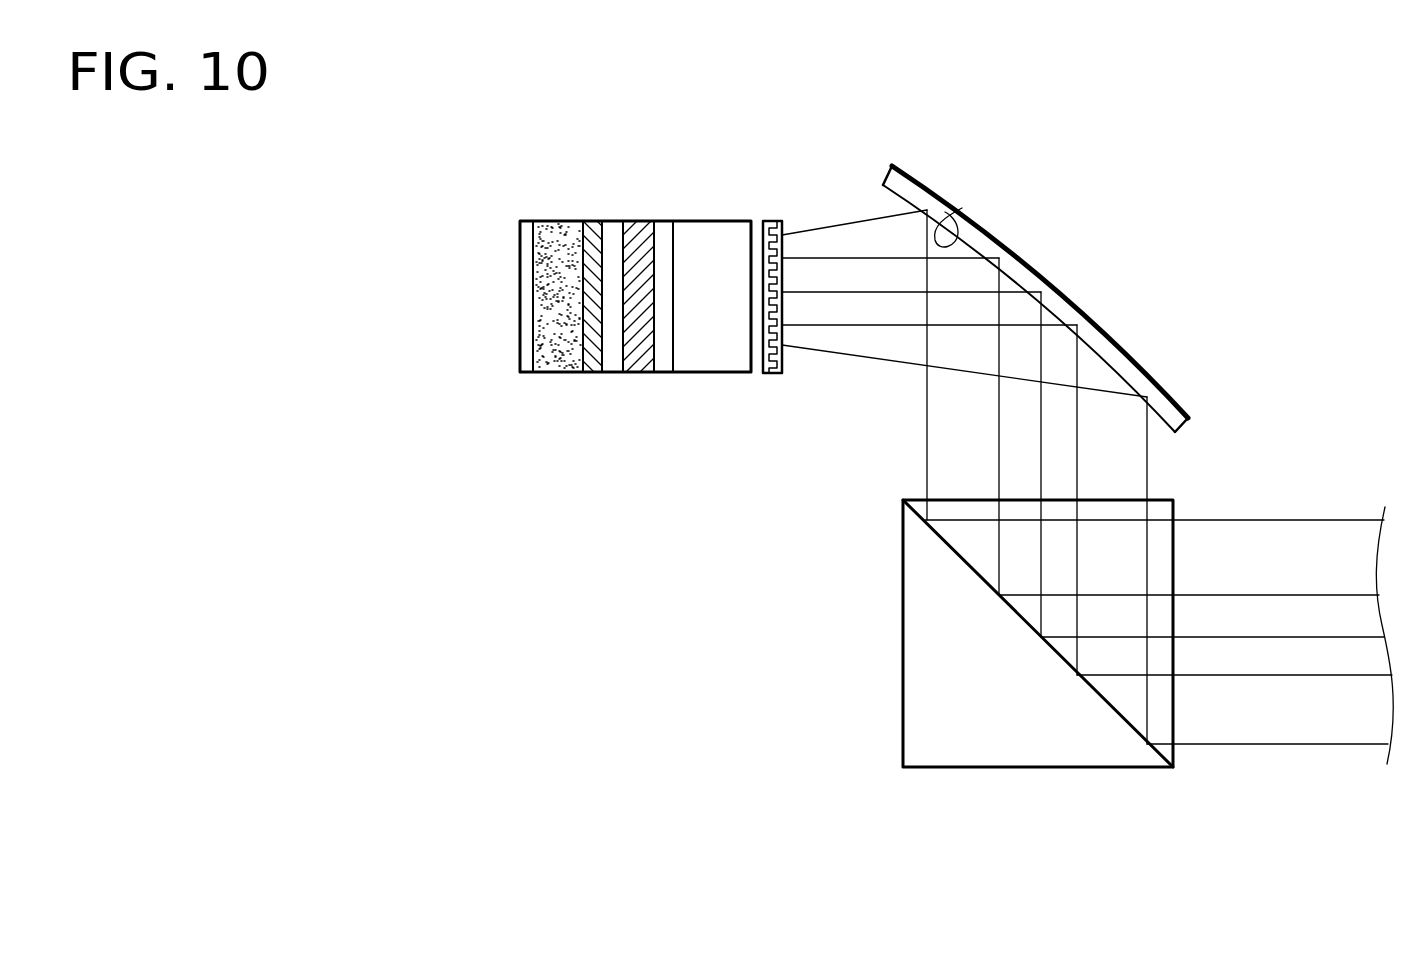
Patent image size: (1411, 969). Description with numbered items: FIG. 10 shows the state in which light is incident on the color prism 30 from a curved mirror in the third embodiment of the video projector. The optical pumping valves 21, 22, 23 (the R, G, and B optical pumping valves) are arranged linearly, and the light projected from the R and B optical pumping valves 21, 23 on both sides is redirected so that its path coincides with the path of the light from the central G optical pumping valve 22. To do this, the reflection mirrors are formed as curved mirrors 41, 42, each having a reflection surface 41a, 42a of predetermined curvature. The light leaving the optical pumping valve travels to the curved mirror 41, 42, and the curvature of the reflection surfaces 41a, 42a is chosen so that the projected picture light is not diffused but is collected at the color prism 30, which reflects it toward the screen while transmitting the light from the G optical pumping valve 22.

The R optical pumping valve 21 is at (657, 230).
The G optical pumping valve 22 is at (651, 297).
The B optical pumping valve 23 is at (683, 218).
The curved mirror 41 is at (1120, 299).
The curved mirror 42 is at (1145, 347).
The reflection surface 41a is at (1012, 198).
The reflection surface 42a is at (962, 208).
The color prism 30 is at (1187, 765).